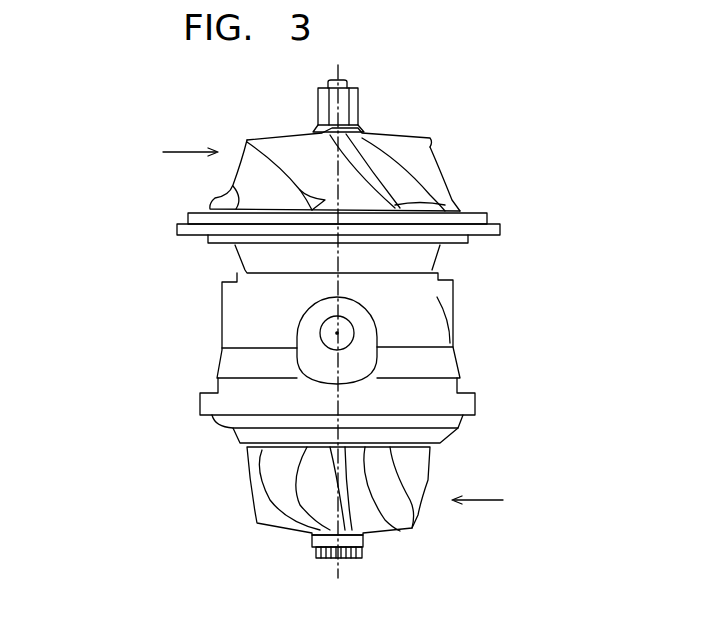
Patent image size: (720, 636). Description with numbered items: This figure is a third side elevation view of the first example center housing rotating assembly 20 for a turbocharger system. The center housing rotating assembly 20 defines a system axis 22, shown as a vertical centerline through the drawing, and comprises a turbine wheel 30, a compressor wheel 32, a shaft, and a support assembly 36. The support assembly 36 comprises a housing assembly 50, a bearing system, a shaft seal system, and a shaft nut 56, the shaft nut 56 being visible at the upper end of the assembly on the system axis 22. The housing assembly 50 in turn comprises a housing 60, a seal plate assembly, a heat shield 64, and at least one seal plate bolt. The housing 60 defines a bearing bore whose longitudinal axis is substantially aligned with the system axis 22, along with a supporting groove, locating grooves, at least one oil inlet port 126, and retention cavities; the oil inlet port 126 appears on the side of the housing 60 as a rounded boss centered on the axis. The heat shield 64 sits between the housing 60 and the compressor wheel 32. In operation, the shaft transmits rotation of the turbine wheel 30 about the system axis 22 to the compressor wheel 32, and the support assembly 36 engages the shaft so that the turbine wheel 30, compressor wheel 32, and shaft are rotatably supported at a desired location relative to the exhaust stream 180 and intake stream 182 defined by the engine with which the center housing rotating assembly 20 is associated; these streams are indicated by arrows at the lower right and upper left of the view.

The center housing rotating assembly 20 is at (425, 111).
The system axis 22 is at (336, 72).
The turbine wheel 30 is at (279, 505).
The compressor wheel 32 is at (418, 170).
The support assembly 36 is at (495, 214).
The housing assembly 50 is at (472, 337).
The shaft nut 56 is at (322, 108).
The housing 60 is at (236, 365).
The heat shield 64 is at (231, 423).
The oil inlet port 126 is at (340, 332).
The exhaust stream 180 is at (486, 500).
The intake stream 182 is at (188, 152).